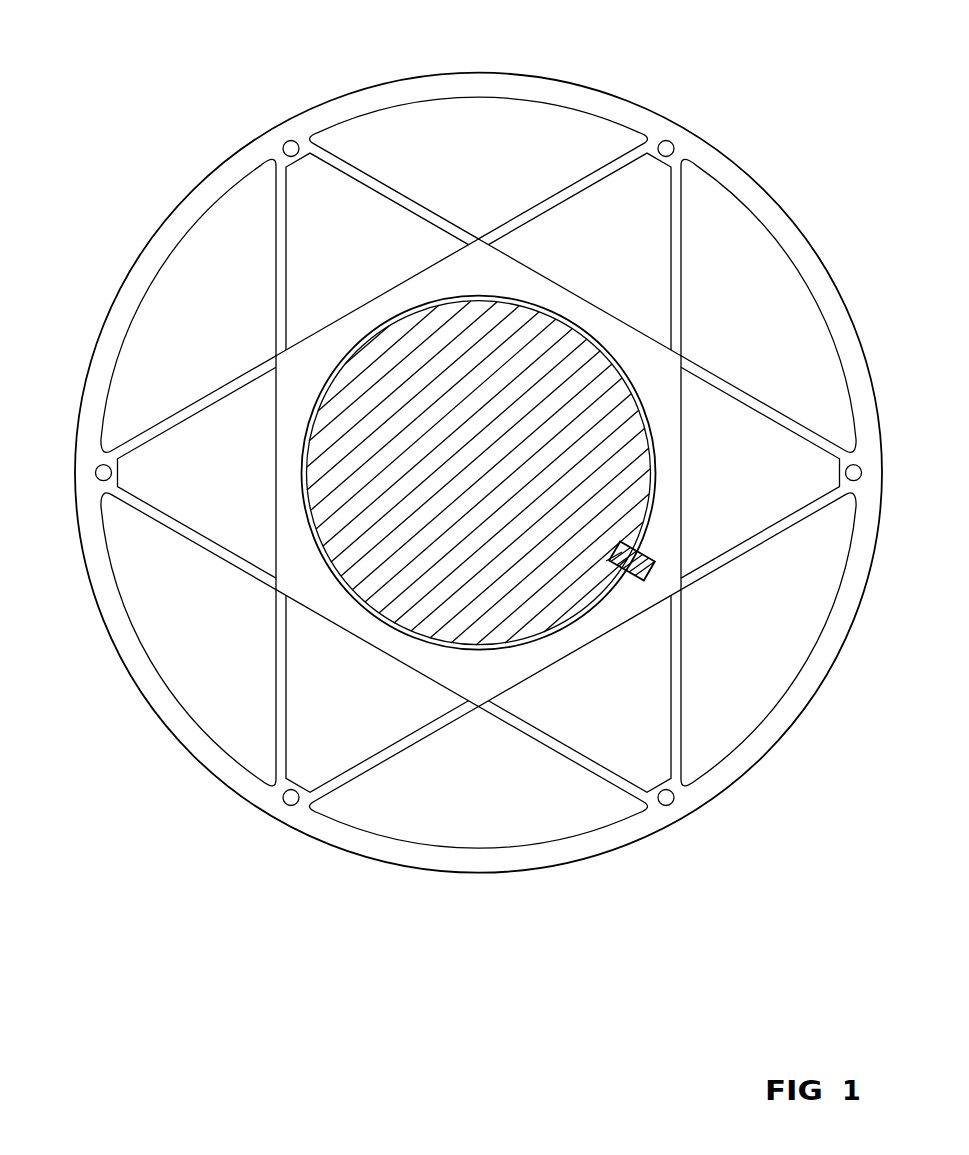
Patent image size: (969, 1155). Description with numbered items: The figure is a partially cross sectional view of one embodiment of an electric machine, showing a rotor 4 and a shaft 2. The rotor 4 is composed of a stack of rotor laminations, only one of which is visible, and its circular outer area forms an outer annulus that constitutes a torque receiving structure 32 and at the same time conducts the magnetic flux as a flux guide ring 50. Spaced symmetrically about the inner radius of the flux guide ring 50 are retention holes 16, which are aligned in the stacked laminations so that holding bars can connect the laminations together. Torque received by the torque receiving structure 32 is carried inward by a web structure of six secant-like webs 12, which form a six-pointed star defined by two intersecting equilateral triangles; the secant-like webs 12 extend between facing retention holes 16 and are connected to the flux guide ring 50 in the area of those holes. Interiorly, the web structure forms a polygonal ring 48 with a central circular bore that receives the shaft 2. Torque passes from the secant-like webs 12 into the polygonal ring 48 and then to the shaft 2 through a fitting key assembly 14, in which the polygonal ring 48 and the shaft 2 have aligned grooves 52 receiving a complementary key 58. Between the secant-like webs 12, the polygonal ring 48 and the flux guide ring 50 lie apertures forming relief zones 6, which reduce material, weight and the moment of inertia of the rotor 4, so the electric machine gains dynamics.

The shaft 2 is at (410, 365).
The rotor 4 is at (70, 79).
The relief zones 6 is at (537, 808).
The secant-like webs 12 is at (681, 733).
The fitting key assembly 14 is at (697, 596).
The retention holes 16 is at (671, 148).
The torque receiving structure 32 is at (795, 247).
The polygonal ring 48 is at (290, 540).
The flux guide ring 50 is at (500, 73).
The grooves 52 is at (636, 583).
The key 58 is at (652, 548).